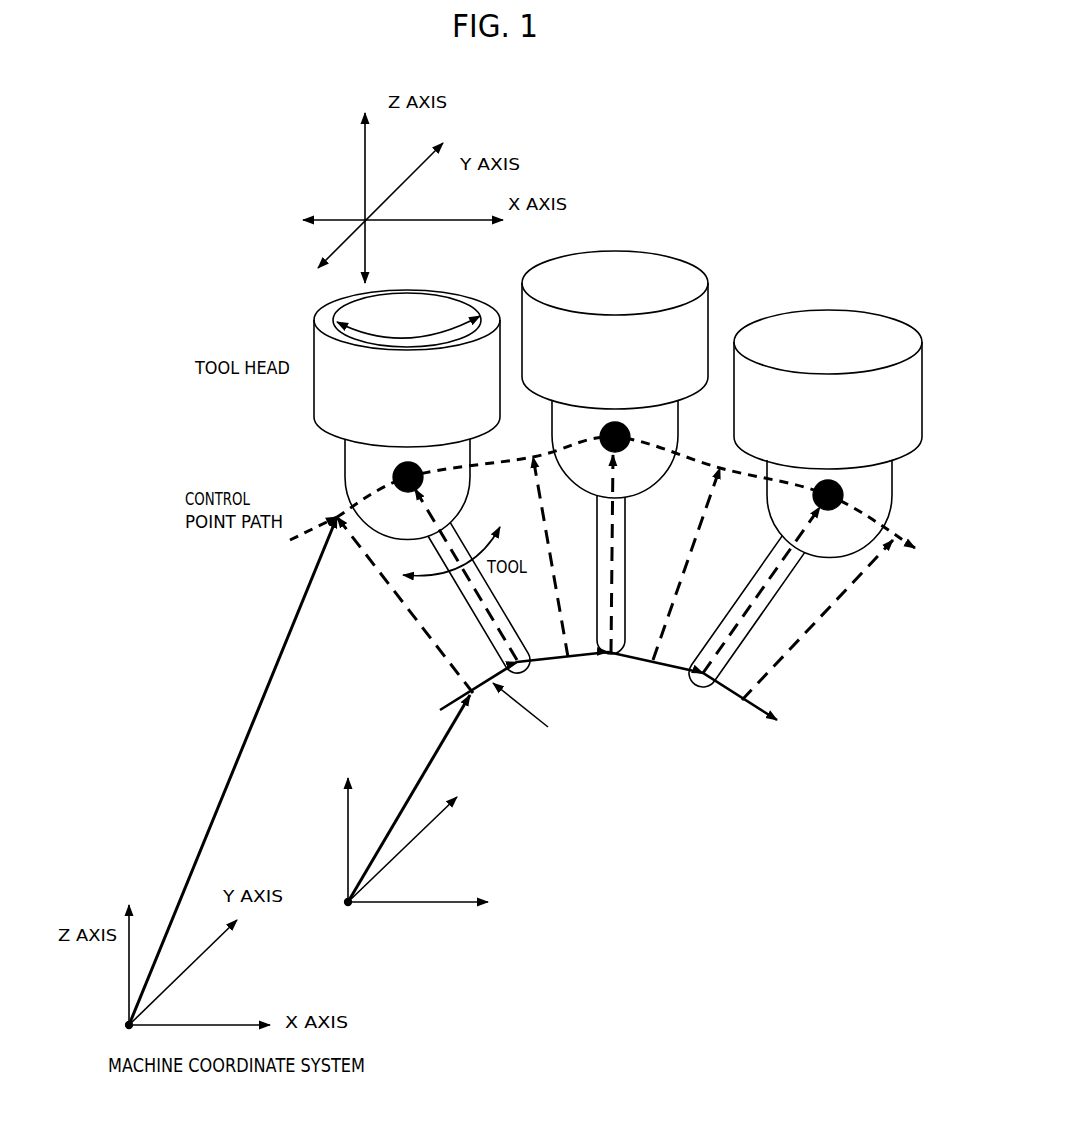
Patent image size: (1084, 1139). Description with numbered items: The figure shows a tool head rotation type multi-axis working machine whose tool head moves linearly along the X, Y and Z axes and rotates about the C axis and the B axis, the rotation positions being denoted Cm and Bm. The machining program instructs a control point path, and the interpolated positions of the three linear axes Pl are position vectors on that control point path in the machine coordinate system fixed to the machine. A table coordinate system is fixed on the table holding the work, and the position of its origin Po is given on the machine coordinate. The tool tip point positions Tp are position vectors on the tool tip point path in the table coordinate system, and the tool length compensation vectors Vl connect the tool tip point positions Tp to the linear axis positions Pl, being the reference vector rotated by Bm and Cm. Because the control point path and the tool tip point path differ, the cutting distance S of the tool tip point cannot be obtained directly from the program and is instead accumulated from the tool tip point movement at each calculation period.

The positions of three linear axes Pl is at (212, 771).
The tool length compensation vector Vl is at (593, 578).
The tool tip point position Tp is at (384, 798).
The cutting distance S is at (608, 704).
The origin of the table coordinate system Po is at (462, 859).
The C axis rotation position Cm is at (408, 315).
The B axis rotation position Bm is at (465, 527).